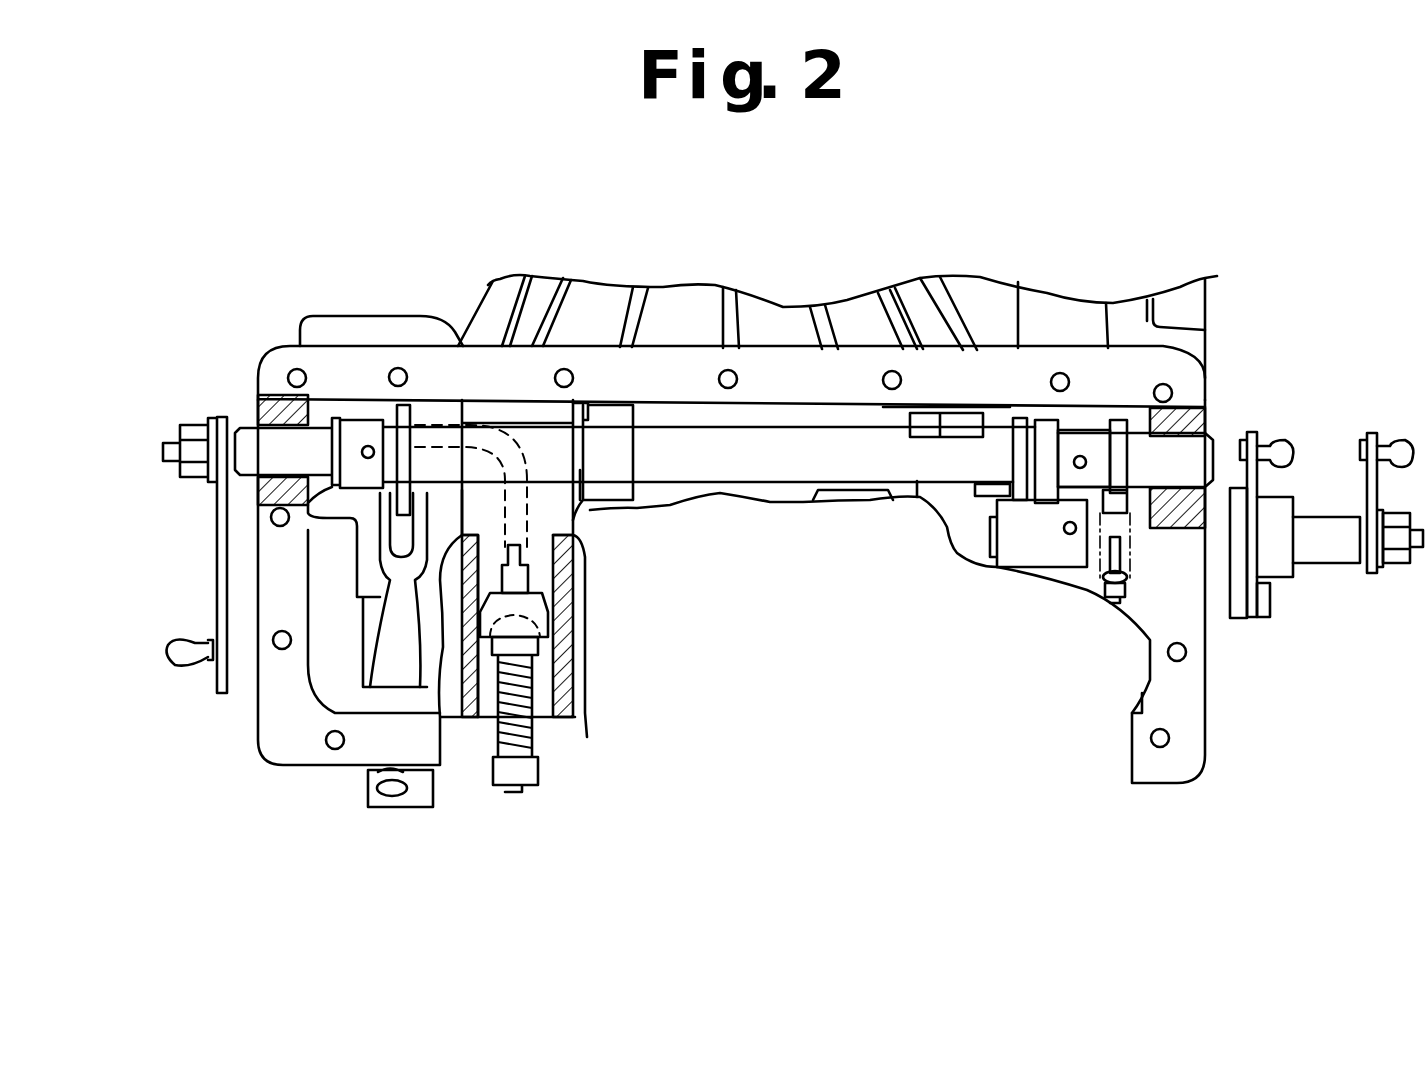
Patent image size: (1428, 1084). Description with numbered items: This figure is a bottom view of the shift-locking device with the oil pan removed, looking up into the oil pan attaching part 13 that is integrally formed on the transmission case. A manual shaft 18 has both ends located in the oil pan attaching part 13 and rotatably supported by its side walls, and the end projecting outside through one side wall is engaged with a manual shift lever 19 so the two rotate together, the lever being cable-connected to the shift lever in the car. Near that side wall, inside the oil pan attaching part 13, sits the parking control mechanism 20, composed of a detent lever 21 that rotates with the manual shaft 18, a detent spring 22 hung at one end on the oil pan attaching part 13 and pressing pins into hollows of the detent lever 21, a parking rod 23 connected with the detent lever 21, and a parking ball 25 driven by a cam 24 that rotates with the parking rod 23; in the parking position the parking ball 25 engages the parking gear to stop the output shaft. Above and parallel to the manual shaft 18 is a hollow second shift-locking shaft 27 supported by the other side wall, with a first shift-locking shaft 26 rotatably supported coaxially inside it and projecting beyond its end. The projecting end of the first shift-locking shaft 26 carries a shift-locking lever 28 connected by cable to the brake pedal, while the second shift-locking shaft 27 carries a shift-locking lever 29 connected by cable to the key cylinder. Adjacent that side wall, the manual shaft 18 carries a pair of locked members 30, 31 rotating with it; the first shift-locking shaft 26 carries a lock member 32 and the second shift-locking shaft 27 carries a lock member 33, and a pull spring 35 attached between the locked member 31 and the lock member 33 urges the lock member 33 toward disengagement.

The oil pan attaching part 13 is at (273, 747).
The manual shaft 18 is at (765, 447).
The manual shift lever 19 is at (227, 550).
The parking control mechanism 20 is at (434, 503).
The detent lever 21 is at (398, 404).
The detent spring 22 is at (400, 613).
The parking rod 23 is at (517, 552).
The cam 24 is at (545, 628).
The parking ball 25 is at (540, 613).
The first shift-locking shaft 26 is at (1337, 550).
The second shift-locking shaft 27 is at (1278, 563).
The shift-locking lever 28 is at (1373, 433).
The shift-locking lever 29 is at (1254, 432).
The locked member 30 is at (1043, 420).
The locked member 31 is at (1120, 420).
The lock member 32 is at (1053, 535).
The lock member 33 is at (1113, 552).
The pull spring 35 is at (1100, 580).